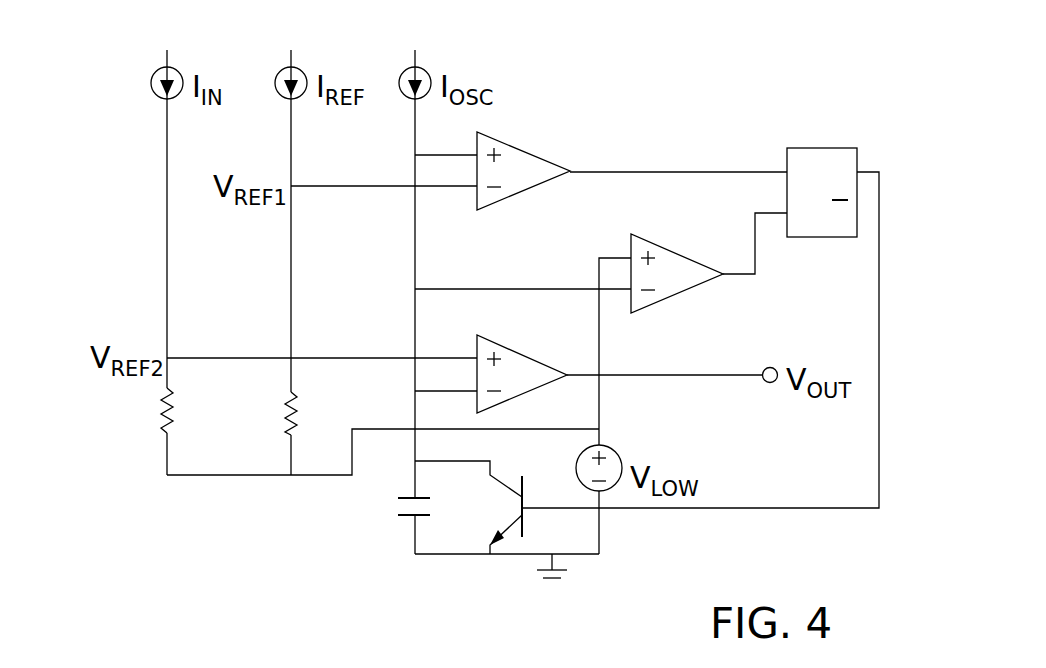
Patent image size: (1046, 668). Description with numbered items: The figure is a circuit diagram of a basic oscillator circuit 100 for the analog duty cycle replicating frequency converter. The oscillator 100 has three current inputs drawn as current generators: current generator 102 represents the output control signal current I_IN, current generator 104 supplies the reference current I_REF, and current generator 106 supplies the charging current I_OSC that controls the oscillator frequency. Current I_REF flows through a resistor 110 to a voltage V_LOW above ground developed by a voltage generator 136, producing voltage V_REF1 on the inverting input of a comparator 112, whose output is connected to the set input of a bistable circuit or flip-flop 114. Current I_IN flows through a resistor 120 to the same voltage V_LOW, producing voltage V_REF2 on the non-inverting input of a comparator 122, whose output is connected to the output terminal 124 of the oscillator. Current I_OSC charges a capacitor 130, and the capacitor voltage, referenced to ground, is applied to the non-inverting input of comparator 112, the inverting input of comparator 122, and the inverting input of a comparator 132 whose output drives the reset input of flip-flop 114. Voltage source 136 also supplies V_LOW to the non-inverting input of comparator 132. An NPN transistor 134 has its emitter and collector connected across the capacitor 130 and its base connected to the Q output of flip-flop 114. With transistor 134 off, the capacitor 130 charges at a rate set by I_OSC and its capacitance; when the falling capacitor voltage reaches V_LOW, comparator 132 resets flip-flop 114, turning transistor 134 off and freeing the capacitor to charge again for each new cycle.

The oscillator circuit 100 is at (648, 85).
The current generator 102 is at (145, 76).
The current generator 104 is at (270, 76).
The current generator 106 is at (394, 76).
The resistor 110 is at (283, 411).
The comparator 112 is at (507, 140).
The bistable circuit (flip-flop) 114 is at (780, 158).
The resistor 120 is at (160, 410).
The comparator 122 is at (508, 344).
The output terminal 124 is at (763, 365).
The capacitor 130 is at (395, 507).
The comparator 132 is at (658, 238).
The NPN transistor 134 is at (505, 507).
The voltage generator (voltage source) 136 is at (609, 447).